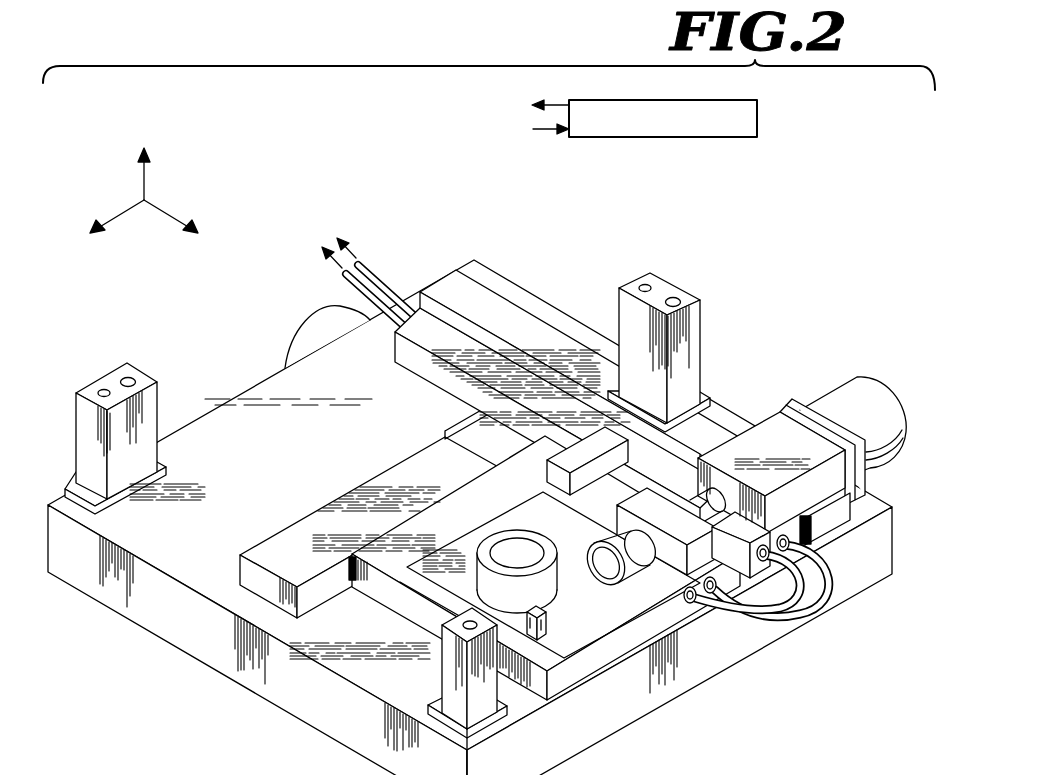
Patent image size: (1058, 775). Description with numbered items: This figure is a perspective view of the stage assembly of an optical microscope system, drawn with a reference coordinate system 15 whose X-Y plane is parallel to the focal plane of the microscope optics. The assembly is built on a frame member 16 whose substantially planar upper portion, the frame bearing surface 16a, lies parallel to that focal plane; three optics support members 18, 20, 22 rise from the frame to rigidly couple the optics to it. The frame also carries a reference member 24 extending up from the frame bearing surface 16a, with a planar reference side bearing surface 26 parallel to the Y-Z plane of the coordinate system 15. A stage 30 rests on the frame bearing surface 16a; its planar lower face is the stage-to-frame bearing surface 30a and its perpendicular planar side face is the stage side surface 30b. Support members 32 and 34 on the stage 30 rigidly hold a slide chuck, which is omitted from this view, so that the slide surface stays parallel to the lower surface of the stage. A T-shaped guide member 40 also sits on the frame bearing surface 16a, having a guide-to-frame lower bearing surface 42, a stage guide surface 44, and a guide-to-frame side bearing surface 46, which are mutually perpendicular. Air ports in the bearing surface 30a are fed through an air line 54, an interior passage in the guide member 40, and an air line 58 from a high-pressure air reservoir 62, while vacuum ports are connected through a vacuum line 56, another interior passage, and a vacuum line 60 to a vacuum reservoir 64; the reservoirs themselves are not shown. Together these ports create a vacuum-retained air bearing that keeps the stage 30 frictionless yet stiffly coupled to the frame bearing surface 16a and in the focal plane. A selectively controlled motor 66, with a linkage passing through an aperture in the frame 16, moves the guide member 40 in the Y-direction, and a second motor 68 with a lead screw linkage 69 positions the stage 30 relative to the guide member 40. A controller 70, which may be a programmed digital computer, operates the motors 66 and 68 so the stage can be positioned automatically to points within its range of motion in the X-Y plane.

The reference coordinate system 15 is at (170, 189).
The frame member 16 is at (163, 625).
The frame bearing surface 16a is at (247, 607).
The optics support member 18 is at (456, 660).
The optics support member 20 is at (88, 437).
The optics support member 22 is at (690, 342).
The reference member 24 is at (525, 329).
The reference side bearing surface 26 is at (801, 529).
The stage 30 is at (410, 575).
The stage-to-frame bearing surface 30a is at (415, 632).
The stage side surface 30b is at (343, 570).
The support member 32 is at (532, 625).
The support member 34 is at (547, 494).
The guide member 40 is at (566, 414).
The guide-to-frame lower bearing surface 42 is at (738, 580).
The stage guide surface 44 is at (312, 598).
The guide-to-frame side bearing surface 46 is at (812, 545).
The air line 54 is at (785, 603).
The vacuum line 56 is at (815, 602).
The air line 58 is at (358, 300).
The vacuum line 60 is at (385, 291).
The air reservoir 62 is at (337, 265).
The vacuum reservoir 64 is at (353, 245).
The motor 66 is at (297, 337).
The motor 68 is at (843, 390).
The lead screw linkage 69 is at (630, 472).
The controller 70 is at (690, 100).